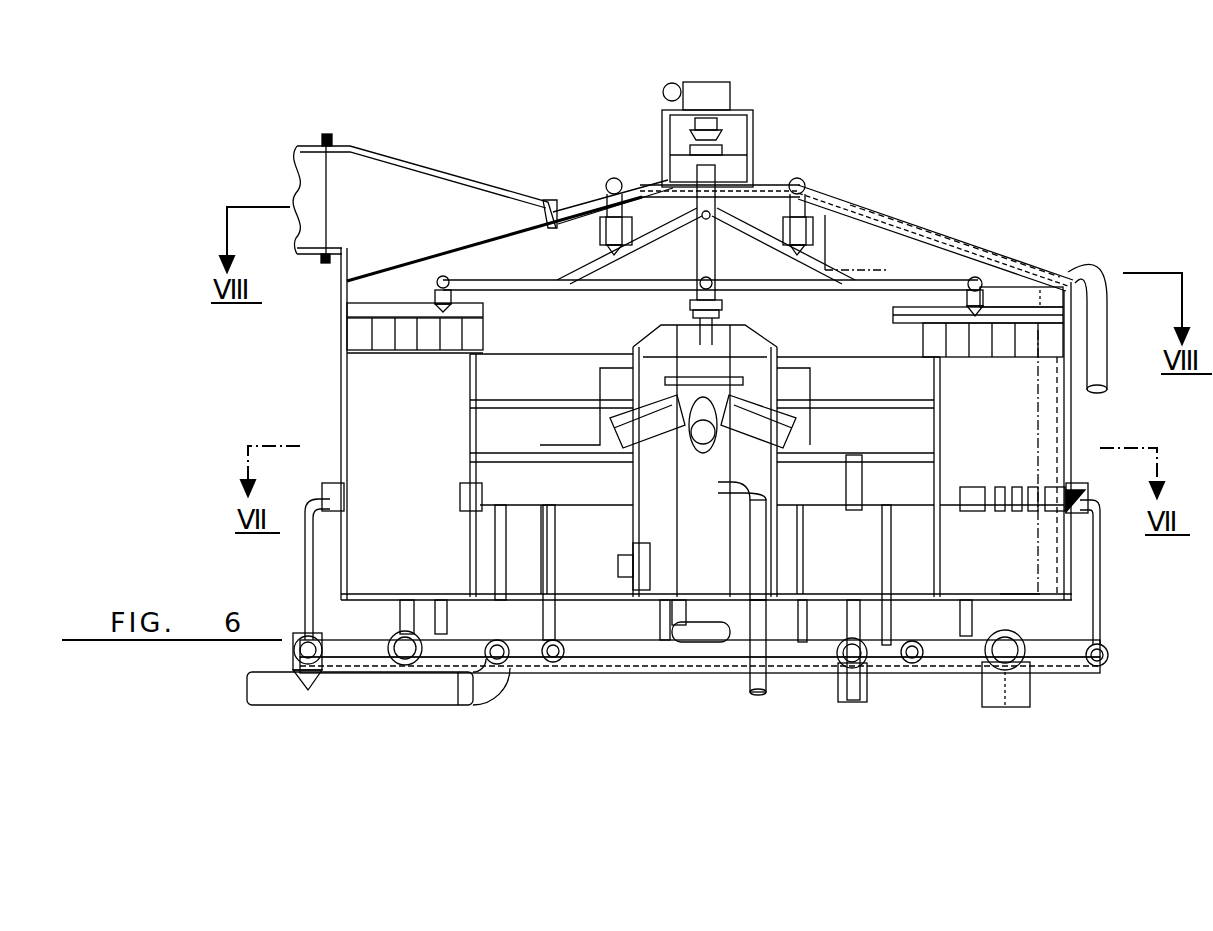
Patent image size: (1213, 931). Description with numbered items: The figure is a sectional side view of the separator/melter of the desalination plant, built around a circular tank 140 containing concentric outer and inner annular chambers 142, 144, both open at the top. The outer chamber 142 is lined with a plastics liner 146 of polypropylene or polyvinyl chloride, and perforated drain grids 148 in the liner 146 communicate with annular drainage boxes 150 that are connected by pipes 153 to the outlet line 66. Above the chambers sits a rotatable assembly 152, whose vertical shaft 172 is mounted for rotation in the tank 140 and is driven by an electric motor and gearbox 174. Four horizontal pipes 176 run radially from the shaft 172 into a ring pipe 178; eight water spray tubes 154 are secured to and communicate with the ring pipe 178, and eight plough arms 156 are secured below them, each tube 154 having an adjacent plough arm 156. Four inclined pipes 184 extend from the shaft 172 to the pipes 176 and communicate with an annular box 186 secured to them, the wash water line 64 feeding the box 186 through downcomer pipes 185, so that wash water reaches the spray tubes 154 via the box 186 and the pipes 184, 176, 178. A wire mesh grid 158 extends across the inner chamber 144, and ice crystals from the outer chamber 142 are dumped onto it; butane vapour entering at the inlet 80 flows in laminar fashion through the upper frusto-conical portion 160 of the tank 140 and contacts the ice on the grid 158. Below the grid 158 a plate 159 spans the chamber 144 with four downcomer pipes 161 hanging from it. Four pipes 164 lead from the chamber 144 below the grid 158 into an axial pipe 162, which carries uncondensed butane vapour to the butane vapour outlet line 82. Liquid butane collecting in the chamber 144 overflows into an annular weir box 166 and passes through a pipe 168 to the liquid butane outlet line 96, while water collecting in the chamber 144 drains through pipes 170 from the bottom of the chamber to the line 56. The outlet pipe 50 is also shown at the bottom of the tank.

The outlet pipe 50 is at (995, 685).
The line 56 is at (852, 684).
The wash water line 64 is at (1100, 391).
The outlet line 66 is at (285, 688).
The inlet 80 is at (320, 175).
The butane vapour outlet line 82 is at (690, 607).
The liquid butane outlet line 96 is at (750, 686).
The circular tank 140 is at (1062, 411).
The outer annular chamber 142 is at (1020, 582).
The inner annular chamber 144 is at (915, 550).
The plastics liner 146 is at (1060, 398).
The perforated drain grids 148 is at (1075, 490).
The annular drainage boxes 150 is at (887, 493).
The assembly 152 is at (907, 283).
The pipes 153 is at (312, 548).
The water spray tubes 154 is at (1075, 272).
The plough arms 156 is at (1030, 340).
The wire mesh grid 158 is at (525, 400).
The plate 159 is at (925, 456).
The upper frusto-conical portion 160 is at (575, 205).
The downcomer pipes 161 is at (856, 470).
The axial pipe 162 is at (700, 560).
The pipes 164 is at (775, 422).
The annular weir box 166 is at (607, 493).
The pipe 168 is at (760, 620).
The pipes 170 is at (860, 623).
The vertical shaft 172 is at (708, 195).
The electric motor and gearbox 174 is at (730, 95).
The horizontal pipes 176 is at (976, 280).
The ring pipe 178 is at (1020, 310).
The inclined pipes 184 is at (593, 266).
The downcomer pipes 185 is at (812, 210).
The annular box 186 is at (868, 245).